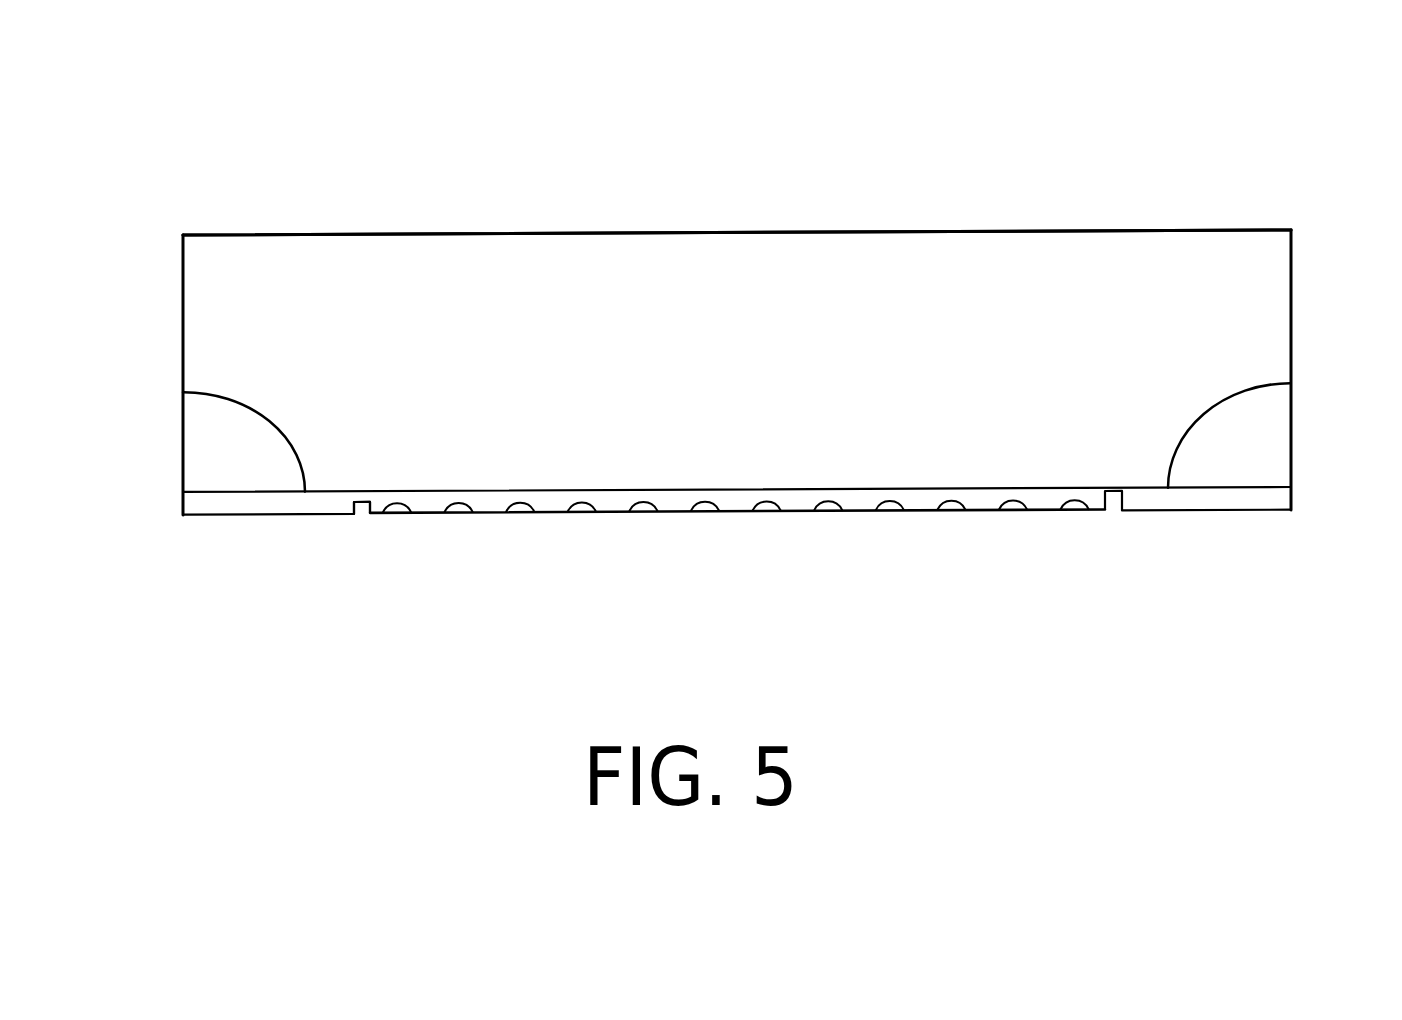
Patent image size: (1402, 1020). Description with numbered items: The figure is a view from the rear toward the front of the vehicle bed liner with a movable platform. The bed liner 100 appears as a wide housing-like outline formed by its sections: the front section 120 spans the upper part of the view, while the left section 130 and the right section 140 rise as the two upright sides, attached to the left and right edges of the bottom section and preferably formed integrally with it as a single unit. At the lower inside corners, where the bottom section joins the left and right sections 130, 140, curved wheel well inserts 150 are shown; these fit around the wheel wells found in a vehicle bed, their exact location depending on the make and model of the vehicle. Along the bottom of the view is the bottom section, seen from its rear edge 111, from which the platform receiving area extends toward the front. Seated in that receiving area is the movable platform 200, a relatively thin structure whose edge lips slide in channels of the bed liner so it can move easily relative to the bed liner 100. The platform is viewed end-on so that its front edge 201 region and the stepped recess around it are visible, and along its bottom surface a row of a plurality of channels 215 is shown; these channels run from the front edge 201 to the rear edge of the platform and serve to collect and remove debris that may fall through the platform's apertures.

The bed liner 100 is at (460, 234).
The front section 120 is at (863, 280).
The left section 130 is at (182, 260).
The right section 140 is at (1292, 268).
The wheel well inserts 150 is at (228, 428).
The rear edge 111 is at (253, 505).
The movable platform 200 is at (1034, 493).
The front edge 201 is at (430, 500).
The channels 215 is at (765, 505).